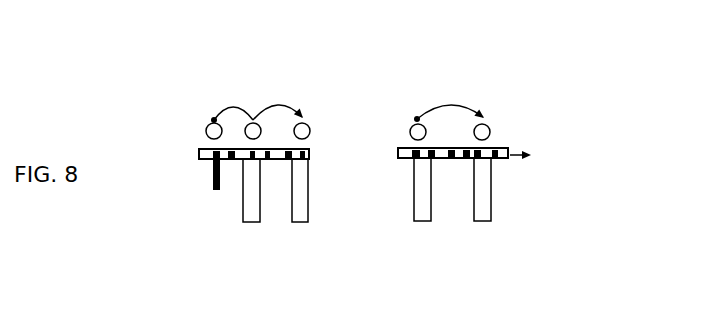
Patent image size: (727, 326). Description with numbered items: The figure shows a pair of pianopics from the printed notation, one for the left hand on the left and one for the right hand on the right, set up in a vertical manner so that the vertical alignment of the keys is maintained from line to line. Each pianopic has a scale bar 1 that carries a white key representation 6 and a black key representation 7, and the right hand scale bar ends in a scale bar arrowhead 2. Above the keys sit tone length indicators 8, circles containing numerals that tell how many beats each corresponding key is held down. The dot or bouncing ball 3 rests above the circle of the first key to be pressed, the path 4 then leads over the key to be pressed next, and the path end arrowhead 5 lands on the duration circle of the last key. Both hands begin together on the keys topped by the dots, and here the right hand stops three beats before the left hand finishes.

The scale bar 1 is at (401, 157).
The scale bar arrowhead 2 is at (517, 162).
The bouncing ball 3 is at (417, 118).
The path 4 is at (280, 107).
The path end arrowhead 5 is at (483, 117).
The white key representation 6 is at (425, 221).
The black key representation 7 is at (216, 190).
The tone length indicator 8 is at (206, 129).